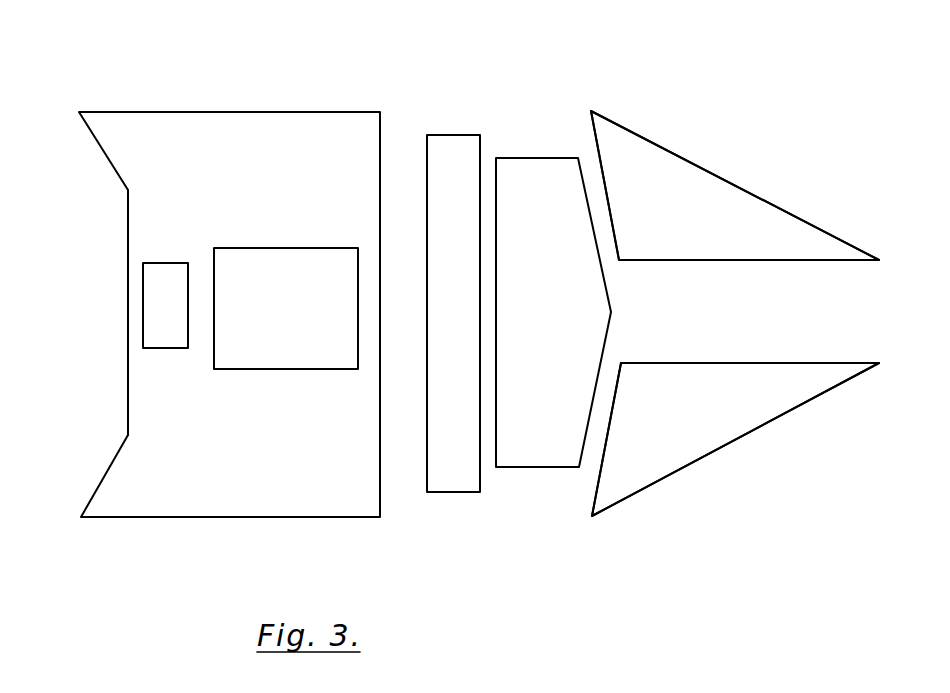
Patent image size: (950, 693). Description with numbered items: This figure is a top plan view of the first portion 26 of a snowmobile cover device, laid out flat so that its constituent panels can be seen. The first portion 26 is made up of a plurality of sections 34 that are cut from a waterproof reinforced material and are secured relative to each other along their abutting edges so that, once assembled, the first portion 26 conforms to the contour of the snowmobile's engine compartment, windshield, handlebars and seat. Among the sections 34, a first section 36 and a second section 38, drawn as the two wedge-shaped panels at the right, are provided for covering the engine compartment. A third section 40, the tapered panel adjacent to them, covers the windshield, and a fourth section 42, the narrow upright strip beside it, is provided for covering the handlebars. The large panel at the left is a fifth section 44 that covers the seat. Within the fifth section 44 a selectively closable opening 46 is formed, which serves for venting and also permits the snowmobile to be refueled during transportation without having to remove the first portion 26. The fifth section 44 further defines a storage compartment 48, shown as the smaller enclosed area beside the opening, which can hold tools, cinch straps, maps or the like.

The first portion 26 is at (662, 89).
The sections 34 is at (257, 79).
The first section 36 is at (678, 213).
The second section 38 is at (708, 393).
The third section 40 is at (541, 313).
The fourth section 42 is at (458, 187).
The fifth section 44 is at (178, 232).
The selectively closable opening 46 is at (275, 258).
The storage compartment 48 is at (167, 336).